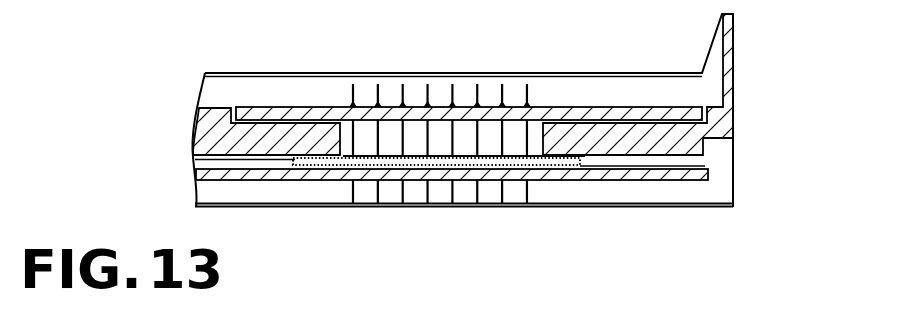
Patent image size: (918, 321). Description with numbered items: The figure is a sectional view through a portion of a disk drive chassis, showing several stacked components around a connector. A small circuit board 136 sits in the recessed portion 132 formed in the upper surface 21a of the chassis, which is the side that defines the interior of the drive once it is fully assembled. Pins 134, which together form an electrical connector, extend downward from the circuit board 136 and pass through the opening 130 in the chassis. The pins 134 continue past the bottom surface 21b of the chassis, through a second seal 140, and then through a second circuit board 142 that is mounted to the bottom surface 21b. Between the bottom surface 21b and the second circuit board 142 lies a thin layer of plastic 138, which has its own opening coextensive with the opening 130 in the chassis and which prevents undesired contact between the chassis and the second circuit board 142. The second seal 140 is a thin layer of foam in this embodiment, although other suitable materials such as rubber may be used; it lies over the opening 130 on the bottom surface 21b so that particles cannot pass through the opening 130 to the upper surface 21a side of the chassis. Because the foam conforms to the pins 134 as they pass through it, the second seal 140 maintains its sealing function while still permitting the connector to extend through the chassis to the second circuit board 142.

The upper surface 21a is at (218, 107).
The bottom surface 21b is at (258, 157).
The opening 130 is at (345, 142).
The recessed portion 132 is at (218, 130).
The pins 134 is at (481, 98).
The circuit board 136 is at (618, 107).
The thin layer of plastic 138 is at (668, 176).
The second seal 140 is at (335, 158).
The second circuit board 142 is at (578, 176).